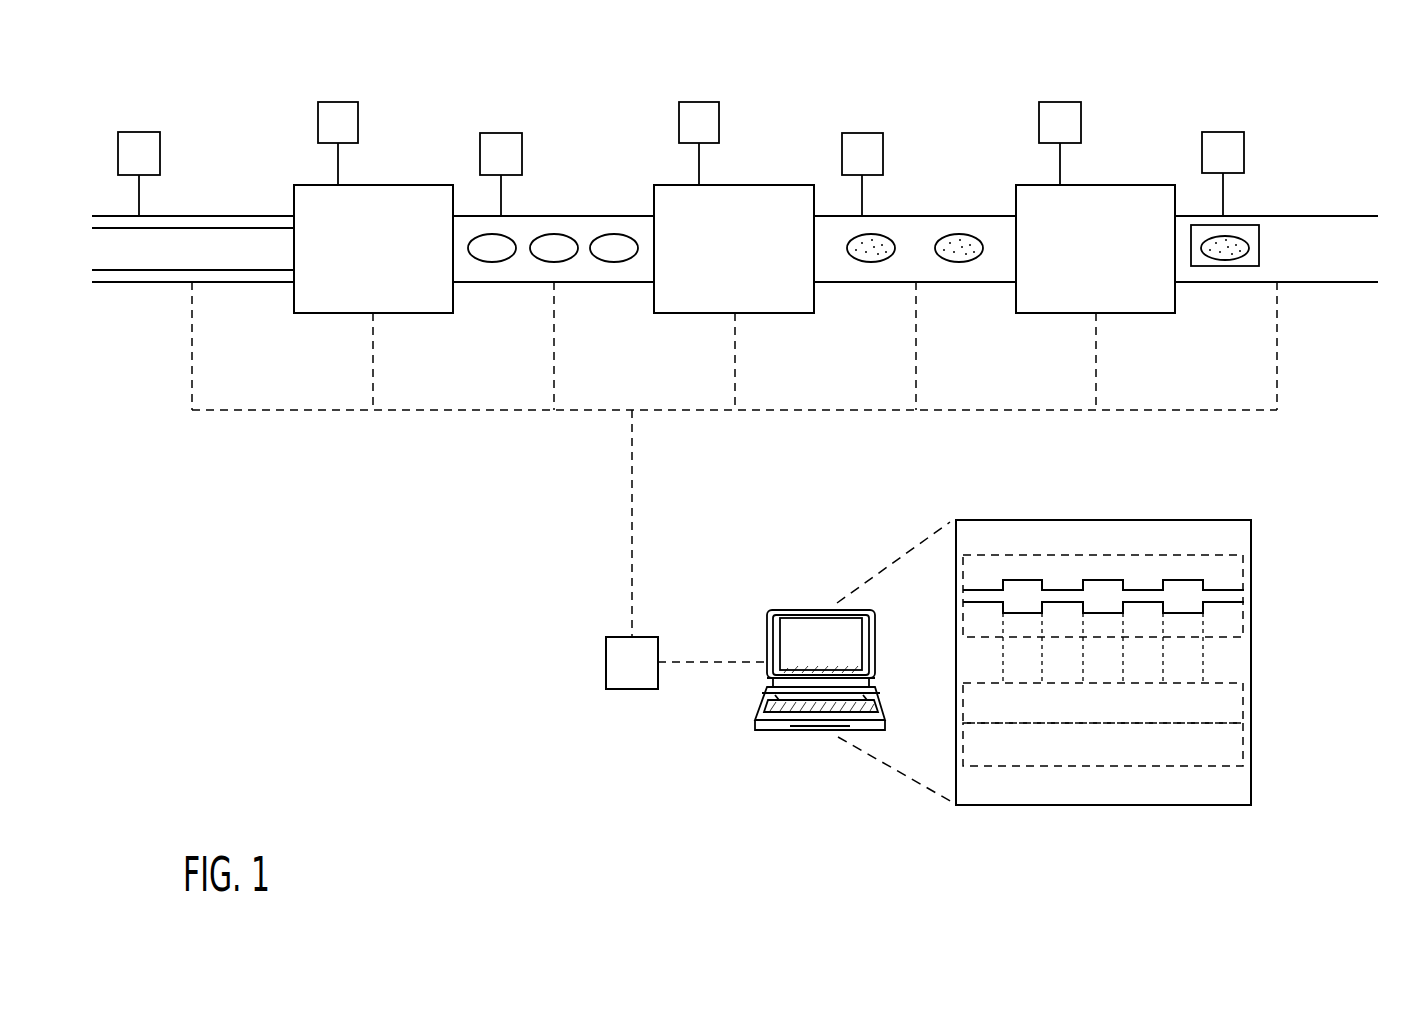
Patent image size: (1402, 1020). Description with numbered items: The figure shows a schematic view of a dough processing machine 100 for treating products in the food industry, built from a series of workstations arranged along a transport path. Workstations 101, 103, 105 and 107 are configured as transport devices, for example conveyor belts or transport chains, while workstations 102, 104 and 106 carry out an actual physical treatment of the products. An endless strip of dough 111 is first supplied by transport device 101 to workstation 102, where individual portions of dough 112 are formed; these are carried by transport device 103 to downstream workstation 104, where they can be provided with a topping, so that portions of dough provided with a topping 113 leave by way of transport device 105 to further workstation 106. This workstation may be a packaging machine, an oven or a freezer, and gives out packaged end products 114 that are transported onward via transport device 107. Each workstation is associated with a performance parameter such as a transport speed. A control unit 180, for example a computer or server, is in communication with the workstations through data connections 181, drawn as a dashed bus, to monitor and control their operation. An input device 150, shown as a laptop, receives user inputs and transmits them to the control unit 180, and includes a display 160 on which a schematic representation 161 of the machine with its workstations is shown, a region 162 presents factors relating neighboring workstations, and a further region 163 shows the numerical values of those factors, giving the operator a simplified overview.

The dough processing machine 100 is at (980, 78).
The transport device 101 is at (267, 216).
The workstation 102 is at (421, 190).
The transport device 103 is at (589, 234).
The workstation 104 is at (781, 190).
The transport device 105 is at (929, 232).
The workstation 106 is at (1144, 190).
The transport device 107 is at (1292, 232).
The strip of dough 111 is at (223, 255).
The portions of dough 112 is at (494, 258).
The portions of dough provided with a topping 113 is at (872, 258).
The packaged end products 114 is at (1228, 258).
The input device 150 is at (790, 611).
The display 160 is at (1228, 520).
The schematic representation 161 is at (1251, 598).
The region 162 is at (1251, 713).
The further region 163 is at (1251, 754).
The control unit 180 is at (621, 683).
The data connections 181 is at (425, 412).